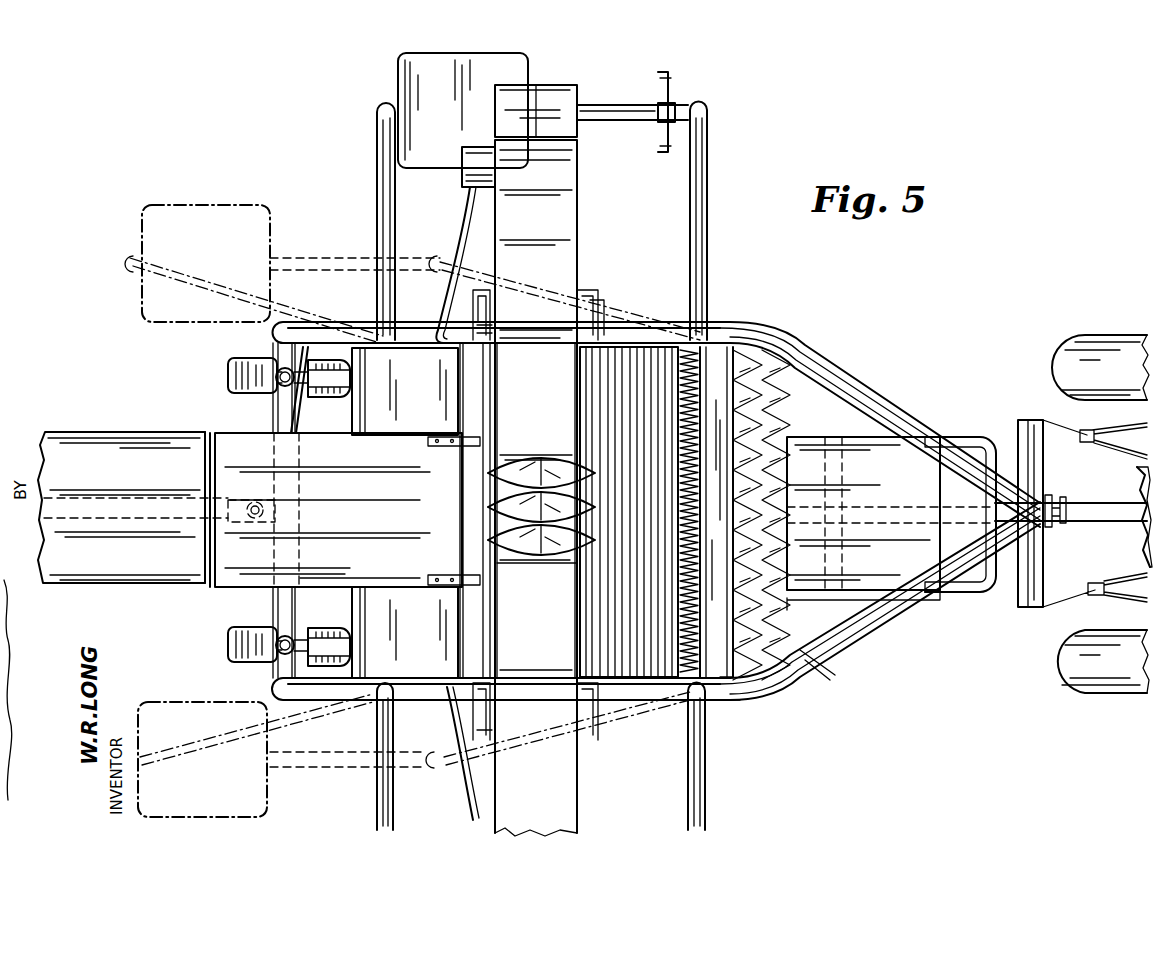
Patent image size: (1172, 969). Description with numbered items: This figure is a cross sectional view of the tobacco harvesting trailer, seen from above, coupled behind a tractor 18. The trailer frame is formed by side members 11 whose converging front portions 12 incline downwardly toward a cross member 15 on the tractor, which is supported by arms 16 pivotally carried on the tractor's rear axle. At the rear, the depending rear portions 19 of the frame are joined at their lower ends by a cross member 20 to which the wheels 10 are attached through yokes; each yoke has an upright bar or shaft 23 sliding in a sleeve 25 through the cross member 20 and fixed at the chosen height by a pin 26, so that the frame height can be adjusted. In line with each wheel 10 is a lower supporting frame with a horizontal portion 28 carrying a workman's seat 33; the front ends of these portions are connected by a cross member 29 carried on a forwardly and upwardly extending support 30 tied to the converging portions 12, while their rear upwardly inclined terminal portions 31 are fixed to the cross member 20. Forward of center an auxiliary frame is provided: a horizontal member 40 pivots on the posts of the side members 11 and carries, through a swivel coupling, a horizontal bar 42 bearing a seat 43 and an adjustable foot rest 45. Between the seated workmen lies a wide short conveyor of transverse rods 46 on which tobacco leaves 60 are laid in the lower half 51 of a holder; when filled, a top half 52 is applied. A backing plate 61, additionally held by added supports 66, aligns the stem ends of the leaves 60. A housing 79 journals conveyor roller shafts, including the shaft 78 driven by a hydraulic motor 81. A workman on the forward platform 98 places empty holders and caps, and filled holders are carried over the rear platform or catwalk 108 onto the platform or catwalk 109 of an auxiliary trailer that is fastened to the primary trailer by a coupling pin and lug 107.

The wheels 10 is at (228, 377).
The side members 11 is at (648, 335).
The converging front portions 12 is at (915, 394).
The cross member 15 is at (1043, 550).
The arms 16 is at (1097, 448).
The tractor 18 is at (1119, 332).
The depending rear portions 19 is at (272, 332).
The cross member 20 is at (286, 440).
The upright bar or shaft 23 is at (282, 368).
The sleeve 25 is at (280, 394).
The pin 26 is at (297, 398).
The horizontal portion 28 is at (812, 672).
The cross member 29 is at (860, 600).
The support 30 is at (945, 498).
The upwardly inclined terminal portions 31 is at (350, 380).
The workman's seat 33 is at (430, 404).
The horizontal member 40 is at (380, 110).
The horizontal bar 42 is at (622, 105).
The seat 43 is at (515, 73).
The foot rest 45 is at (676, 92).
The transverse rods 46 is at (620, 402).
The lower half of holder 51 is at (512, 566).
The top half of holder 52 is at (720, 704).
The tobacco leaves 60 is at (748, 358).
The backing plate 61 is at (488, 392).
The added supports 66 is at (442, 580).
The shaft 78 is at (460, 162).
The housing 79 is at (565, 232).
The hydraulic motor 81 is at (464, 183).
The forward platform 98 is at (848, 440).
The lug 107 is at (278, 508).
The rear platform or catwalk 108 is at (245, 585).
The platform or catwalk 109 is at (108, 424).